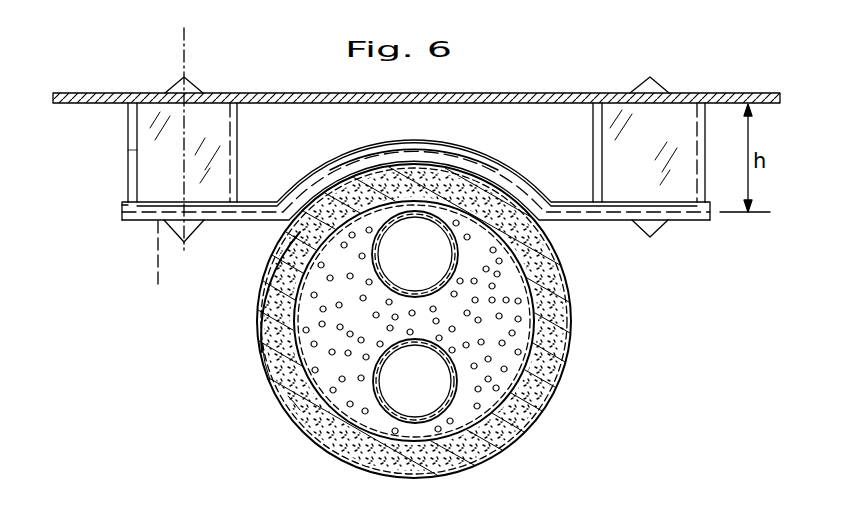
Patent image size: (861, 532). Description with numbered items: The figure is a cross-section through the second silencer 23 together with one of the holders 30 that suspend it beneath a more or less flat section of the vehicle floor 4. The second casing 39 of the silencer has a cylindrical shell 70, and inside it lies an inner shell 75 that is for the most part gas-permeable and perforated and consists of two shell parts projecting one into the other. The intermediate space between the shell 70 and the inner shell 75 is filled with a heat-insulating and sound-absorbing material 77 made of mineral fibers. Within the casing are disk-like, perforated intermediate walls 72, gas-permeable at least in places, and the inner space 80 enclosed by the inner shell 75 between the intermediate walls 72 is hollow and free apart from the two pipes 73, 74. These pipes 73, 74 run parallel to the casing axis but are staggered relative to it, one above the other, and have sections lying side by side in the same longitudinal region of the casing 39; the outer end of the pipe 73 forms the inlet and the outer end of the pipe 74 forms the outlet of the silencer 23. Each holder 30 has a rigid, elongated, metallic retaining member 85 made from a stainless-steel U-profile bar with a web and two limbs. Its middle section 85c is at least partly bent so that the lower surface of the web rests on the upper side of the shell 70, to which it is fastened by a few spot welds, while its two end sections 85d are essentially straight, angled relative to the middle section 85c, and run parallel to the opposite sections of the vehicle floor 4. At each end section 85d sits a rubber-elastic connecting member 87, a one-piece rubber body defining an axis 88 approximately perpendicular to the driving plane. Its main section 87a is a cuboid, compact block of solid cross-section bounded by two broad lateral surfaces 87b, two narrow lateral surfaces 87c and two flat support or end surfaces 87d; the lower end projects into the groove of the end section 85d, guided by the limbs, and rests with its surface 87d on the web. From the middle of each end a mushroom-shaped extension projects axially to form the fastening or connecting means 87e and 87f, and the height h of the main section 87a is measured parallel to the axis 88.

The vehicle floor 4 is at (77, 93).
The second silencer 23 is at (255, 332).
The holder 30 is at (116, 217).
The second casing 39 is at (272, 378).
The cylindrical shell 70 is at (290, 403).
The intermediate wall 72 is at (343, 353).
The pipe 73 is at (452, 283).
The pipe 74 is at (457, 372).
The inner shell 75 is at (503, 415).
The heat-insulating and sound-absorbing material 77 is at (543, 402).
The inner space 80 is at (492, 325).
The retaining member 85 is at (125, 222).
The middle section 85c is at (413, 141).
The end section 85d is at (149, 223).
The connecting member 87 is at (128, 135).
The main section 87a is at (137, 157).
The broad lateral surface 87b is at (222, 184).
The narrow lateral surface 87c is at (128, 190).
The support and/or end surface 87d is at (225, 96).
The fastening and/or connecting means 87e is at (197, 232).
The fastening and/or connecting means 87f is at (214, 73).
The axis 88 is at (182, 56).